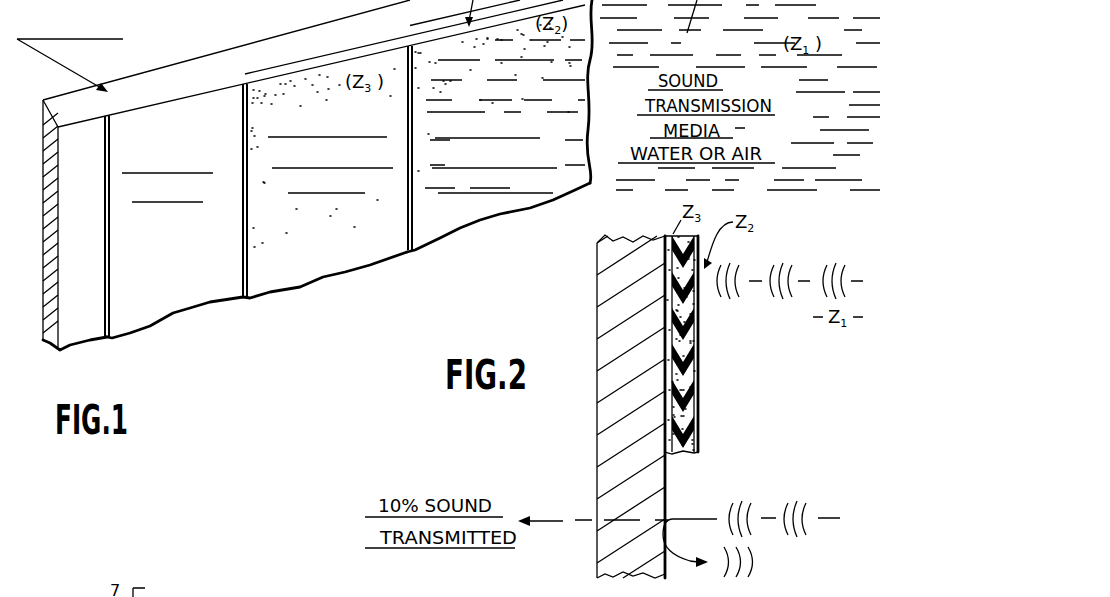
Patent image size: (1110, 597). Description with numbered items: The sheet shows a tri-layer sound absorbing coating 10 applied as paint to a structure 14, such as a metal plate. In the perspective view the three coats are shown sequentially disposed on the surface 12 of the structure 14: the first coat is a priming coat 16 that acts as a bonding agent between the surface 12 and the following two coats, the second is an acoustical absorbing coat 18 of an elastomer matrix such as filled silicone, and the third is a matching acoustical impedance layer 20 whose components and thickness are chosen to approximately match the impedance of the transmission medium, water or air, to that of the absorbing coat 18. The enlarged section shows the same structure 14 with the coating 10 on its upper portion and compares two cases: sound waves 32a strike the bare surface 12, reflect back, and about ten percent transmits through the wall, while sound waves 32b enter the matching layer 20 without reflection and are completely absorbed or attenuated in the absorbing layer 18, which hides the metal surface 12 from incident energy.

In FIG. 2, the tri-layer sound absorbing coating 10 is at (706, 282).
In FIG. 1, the surface 12 is at (83, 224).
In FIG. 2, the surface 12 is at (666, 482).
In FIG. 1, the structure 14 is at (224, 70).
In FIG. 2, the structure 14 is at (611, 308).
In FIG. 1, the priming coat 16 is at (190, 281).
In FIG. 2, the priming coat 16 is at (667, 424).
In FIG. 1, the acoustical absorbing coat 18 is at (327, 253).
In FIG. 2, the acoustical absorbing coat 18 is at (680, 366).
In FIG. 1, the matching acoustical impedance layer 20 is at (481, 208).
In FIG. 2, the matching acoustical impedance layer 20 is at (698, 346).
In FIG. 2, the sound waves 32a is at (774, 271).
In FIG. 2, the sound waves 32b is at (752, 505).